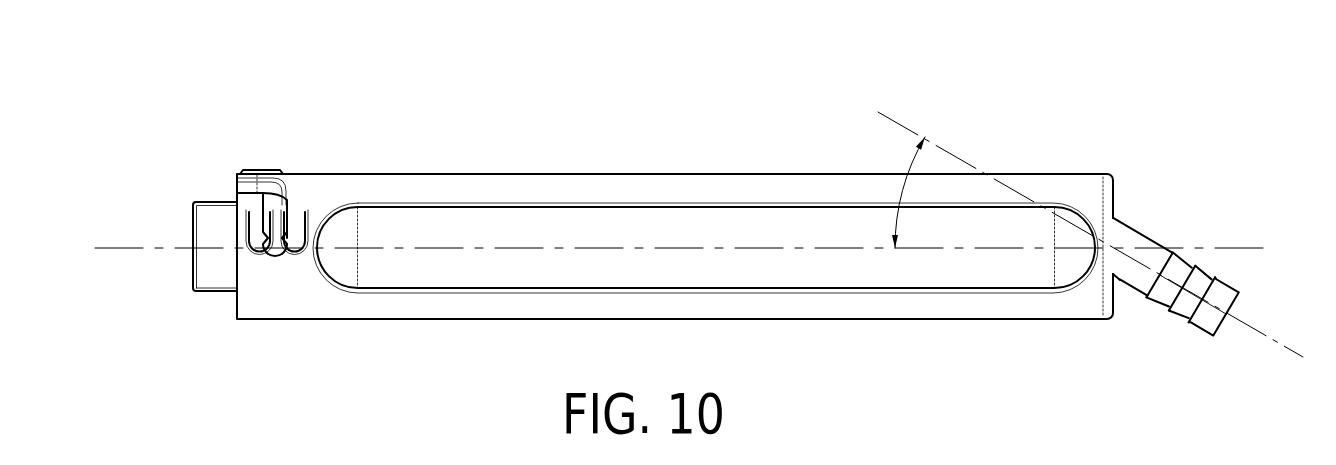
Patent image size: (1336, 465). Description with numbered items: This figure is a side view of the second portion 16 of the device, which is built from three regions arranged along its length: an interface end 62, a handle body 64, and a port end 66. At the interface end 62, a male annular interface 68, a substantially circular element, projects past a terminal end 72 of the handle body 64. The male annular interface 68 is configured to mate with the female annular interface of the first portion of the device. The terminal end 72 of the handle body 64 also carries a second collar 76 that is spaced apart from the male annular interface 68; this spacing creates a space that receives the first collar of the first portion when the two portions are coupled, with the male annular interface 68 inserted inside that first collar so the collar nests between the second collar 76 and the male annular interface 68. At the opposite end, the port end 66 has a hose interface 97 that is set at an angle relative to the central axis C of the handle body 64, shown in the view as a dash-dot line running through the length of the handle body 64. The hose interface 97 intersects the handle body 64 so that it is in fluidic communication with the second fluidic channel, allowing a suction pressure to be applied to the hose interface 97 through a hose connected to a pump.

The second portion 16 is at (926, 112).
The interface end 62 is at (297, 168).
The handle body 64 is at (692, 165).
The port end 66 is at (1155, 188).
The male annular interface 68 is at (207, 183).
The terminal end 72 is at (257, 188).
The second collar 76 is at (273, 293).
The hose interface 97 is at (1180, 303).
The central axis C is at (1247, 248).